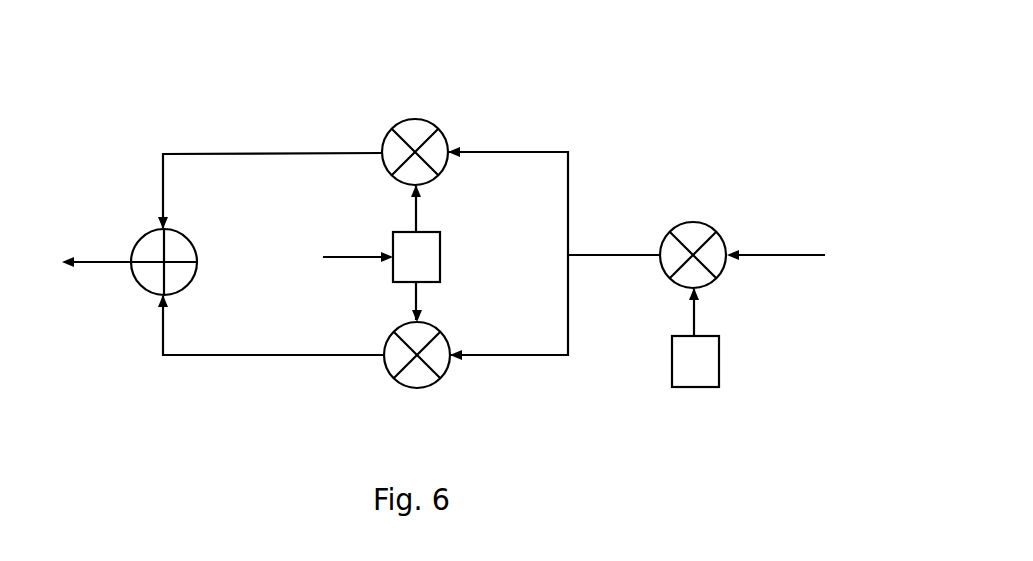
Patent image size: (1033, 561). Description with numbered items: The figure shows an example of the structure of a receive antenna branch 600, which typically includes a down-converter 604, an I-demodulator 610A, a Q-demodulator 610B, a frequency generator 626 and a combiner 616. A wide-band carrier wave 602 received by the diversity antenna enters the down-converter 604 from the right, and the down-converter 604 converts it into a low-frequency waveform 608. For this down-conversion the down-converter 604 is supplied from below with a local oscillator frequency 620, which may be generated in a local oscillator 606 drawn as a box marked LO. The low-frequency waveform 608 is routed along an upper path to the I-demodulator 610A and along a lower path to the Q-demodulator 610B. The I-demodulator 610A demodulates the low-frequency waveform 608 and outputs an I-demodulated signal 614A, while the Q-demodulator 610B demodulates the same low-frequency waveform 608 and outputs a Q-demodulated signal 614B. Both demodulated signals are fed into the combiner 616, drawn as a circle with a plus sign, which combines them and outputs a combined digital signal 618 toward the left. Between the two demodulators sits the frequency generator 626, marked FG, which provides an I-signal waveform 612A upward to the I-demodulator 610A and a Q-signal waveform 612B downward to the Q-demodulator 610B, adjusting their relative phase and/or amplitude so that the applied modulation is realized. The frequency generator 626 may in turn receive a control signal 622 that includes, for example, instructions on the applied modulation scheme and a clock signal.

The receive antenna branch 600 is at (124, 64).
The wide-band carrier wave 602 is at (773, 254).
The down-converter 604 is at (693, 222).
The local oscillator 606 is at (720, 361).
The low-frequency waveform 608 is at (530, 150).
The I-demodulator 610A is at (418, 119).
The Q-demodulator 610B is at (418, 389).
The I-signal waveform 612A is at (417, 208).
The Q-signal waveform 612B is at (417, 298).
The I-demodulated signal 614A is at (272, 153).
The Q-demodulated signal 614B is at (273, 357).
The combiner 616 is at (198, 262).
The combined digital signal 618 is at (96, 260).
The local oscillator frequency 620 is at (696, 313).
The control signal 622 is at (363, 258).
The frequency generator 626 is at (441, 257).